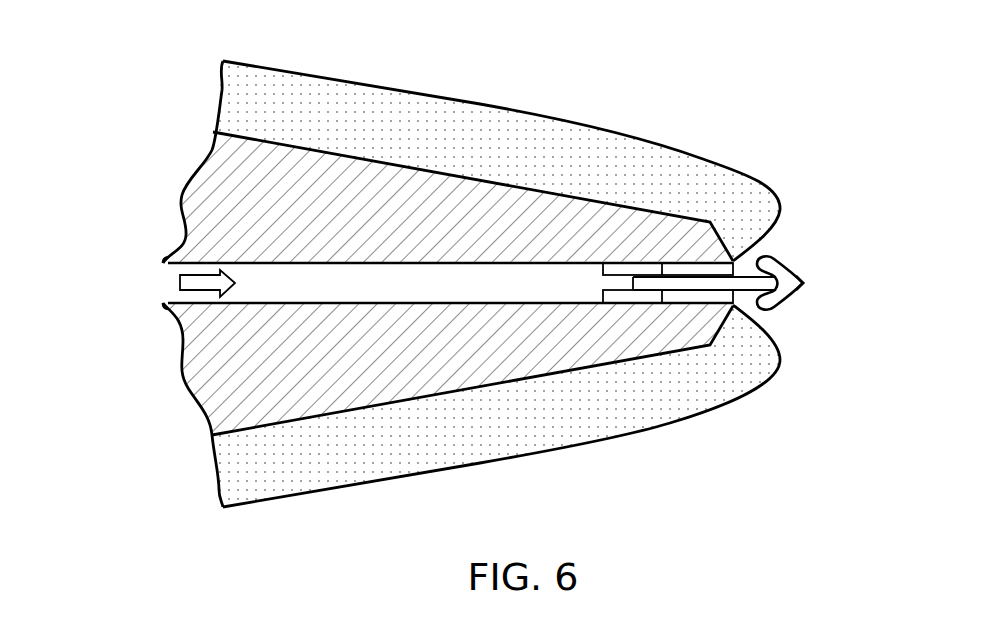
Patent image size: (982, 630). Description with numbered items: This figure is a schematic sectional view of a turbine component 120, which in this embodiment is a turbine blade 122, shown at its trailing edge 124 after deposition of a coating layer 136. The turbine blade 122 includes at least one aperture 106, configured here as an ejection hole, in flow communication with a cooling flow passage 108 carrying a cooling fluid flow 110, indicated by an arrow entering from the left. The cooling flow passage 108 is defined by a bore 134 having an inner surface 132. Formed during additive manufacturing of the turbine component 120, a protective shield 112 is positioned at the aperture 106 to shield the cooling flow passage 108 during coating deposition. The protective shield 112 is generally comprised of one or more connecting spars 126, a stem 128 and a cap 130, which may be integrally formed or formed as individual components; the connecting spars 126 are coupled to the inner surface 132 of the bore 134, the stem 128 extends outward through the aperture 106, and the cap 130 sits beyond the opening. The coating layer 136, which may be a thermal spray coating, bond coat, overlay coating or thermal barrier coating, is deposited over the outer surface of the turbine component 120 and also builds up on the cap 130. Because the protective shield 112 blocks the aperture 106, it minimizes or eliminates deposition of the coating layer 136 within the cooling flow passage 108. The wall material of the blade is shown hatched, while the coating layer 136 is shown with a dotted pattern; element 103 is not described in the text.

The turbine component 120 is at (150, 49).
The bore 134 is at (278, 282).
The turbine blade 122 is at (513, 187).
The upper wall 103 is at (602, 200).
The coating layer 136 is at (675, 165).
The protective shield 112 is at (781, 236).
The cap 130 is at (772, 258).
The aperture 106 is at (742, 292).
The stem 128 is at (712, 340).
The connecting spars 126 is at (630, 298).
The trailing edge 124 is at (403, 403).
The inner surface 132 is at (302, 290).
The cooling fluid flow 110 is at (180, 282).
The cooling flow passage 108 is at (237, 315).